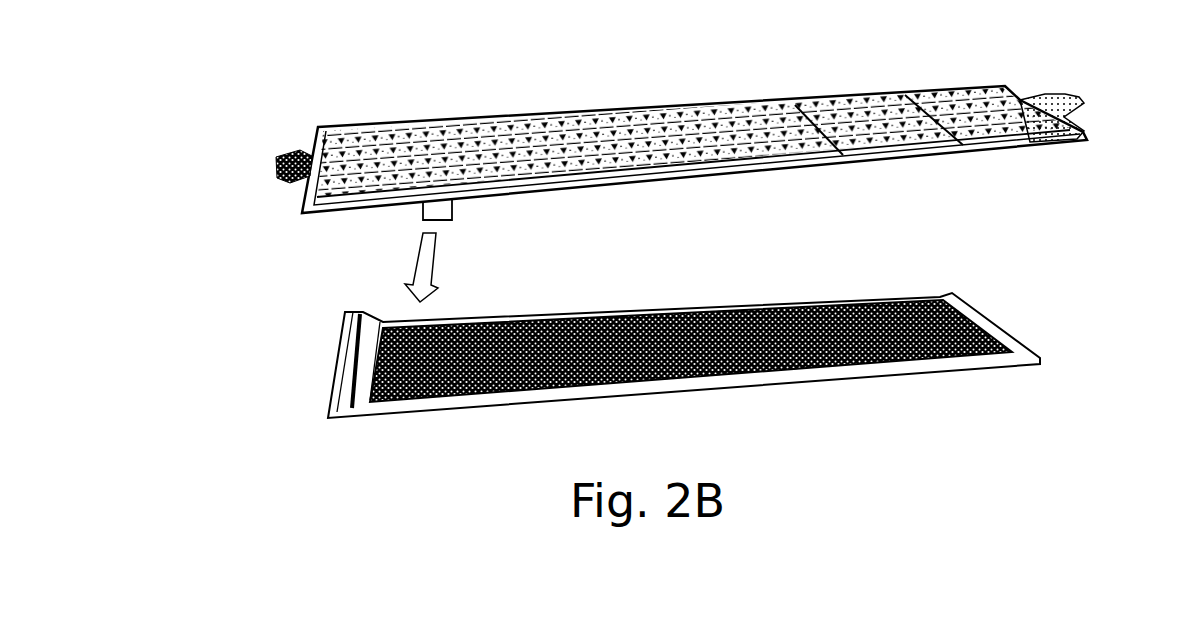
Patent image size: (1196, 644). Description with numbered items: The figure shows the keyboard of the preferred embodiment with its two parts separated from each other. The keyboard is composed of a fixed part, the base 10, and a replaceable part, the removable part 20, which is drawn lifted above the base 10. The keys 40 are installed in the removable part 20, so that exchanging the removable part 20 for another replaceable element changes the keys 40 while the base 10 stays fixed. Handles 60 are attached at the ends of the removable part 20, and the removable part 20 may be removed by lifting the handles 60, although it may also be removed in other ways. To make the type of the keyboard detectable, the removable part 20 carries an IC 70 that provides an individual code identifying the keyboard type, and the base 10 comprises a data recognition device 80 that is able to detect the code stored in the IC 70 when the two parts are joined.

The base 10 is at (1010, 335).
The removable part 20 is at (1082, 132).
The keys 40 is at (345, 122).
The handles 60 is at (275, 165).
The IC (Integrated Circuit) 70 is at (423, 217).
The data recognition device 80 is at (422, 397).